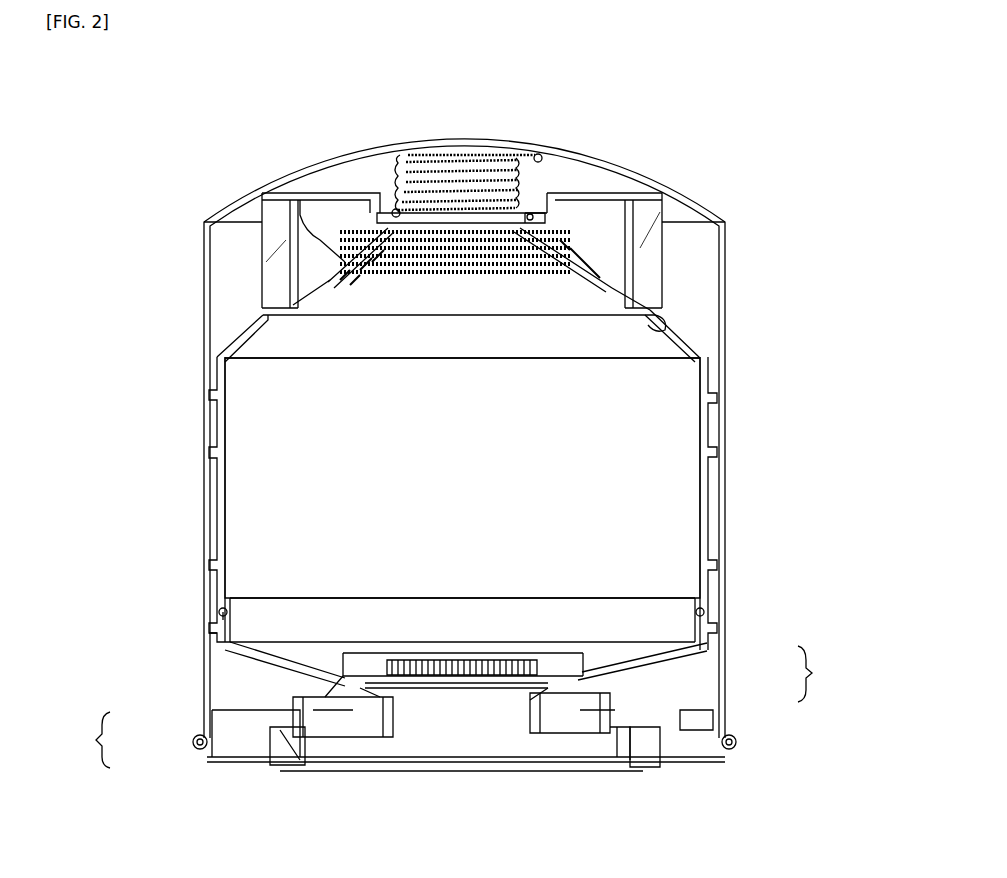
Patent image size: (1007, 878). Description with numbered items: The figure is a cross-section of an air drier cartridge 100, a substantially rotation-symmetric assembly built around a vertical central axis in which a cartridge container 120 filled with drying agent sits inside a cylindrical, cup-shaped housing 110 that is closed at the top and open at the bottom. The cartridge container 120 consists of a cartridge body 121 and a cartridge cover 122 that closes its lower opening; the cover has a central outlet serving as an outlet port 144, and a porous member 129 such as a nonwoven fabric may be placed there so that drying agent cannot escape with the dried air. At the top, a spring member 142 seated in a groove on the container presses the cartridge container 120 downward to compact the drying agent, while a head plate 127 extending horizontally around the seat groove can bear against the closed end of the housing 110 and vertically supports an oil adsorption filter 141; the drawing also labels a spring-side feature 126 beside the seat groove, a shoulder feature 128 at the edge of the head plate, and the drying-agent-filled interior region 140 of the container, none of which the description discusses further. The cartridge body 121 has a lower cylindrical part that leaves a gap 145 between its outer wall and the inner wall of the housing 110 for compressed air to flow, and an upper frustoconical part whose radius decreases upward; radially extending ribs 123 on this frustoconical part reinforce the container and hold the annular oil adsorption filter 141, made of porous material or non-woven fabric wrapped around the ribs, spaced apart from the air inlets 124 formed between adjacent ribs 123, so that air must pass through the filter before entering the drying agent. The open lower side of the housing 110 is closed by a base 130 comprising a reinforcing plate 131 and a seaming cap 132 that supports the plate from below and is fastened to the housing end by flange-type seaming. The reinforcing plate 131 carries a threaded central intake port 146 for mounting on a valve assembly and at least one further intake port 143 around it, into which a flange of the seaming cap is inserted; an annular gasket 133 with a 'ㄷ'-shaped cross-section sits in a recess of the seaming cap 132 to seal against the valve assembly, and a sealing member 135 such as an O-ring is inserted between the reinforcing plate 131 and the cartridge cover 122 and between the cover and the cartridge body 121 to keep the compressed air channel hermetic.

The air drier cartridge 100 is at (508, 433).
The housing 110 is at (726, 262).
The cartridge container 120 is at (528, 505).
The cartridge body 121 is at (548, 655).
The cartridge cover 122 is at (712, 672).
The ribs 123 is at (290, 213).
The air inlets 124 is at (355, 232).
The spring holder 126 is at (528, 212).
The head plate 127 is at (620, 200).
The rounded corner 128 is at (668, 320).
The porous member 129 is at (708, 623).
The base 130 is at (395, 770).
The reinforcing plate 131 is at (200, 712).
The seaming cap 132 is at (200, 757).
The gasket 133 is at (637, 757).
The sealing member 135 is at (705, 610).
The weight 140 is at (665, 480).
The oil adsorption filter 141 is at (275, 262).
The spring member 142 is at (462, 158).
The intake port 143 is at (327, 735).
The outlet port 144 is at (430, 690).
The gap 145 is at (217, 638).
The intake port 146 is at (532, 705).